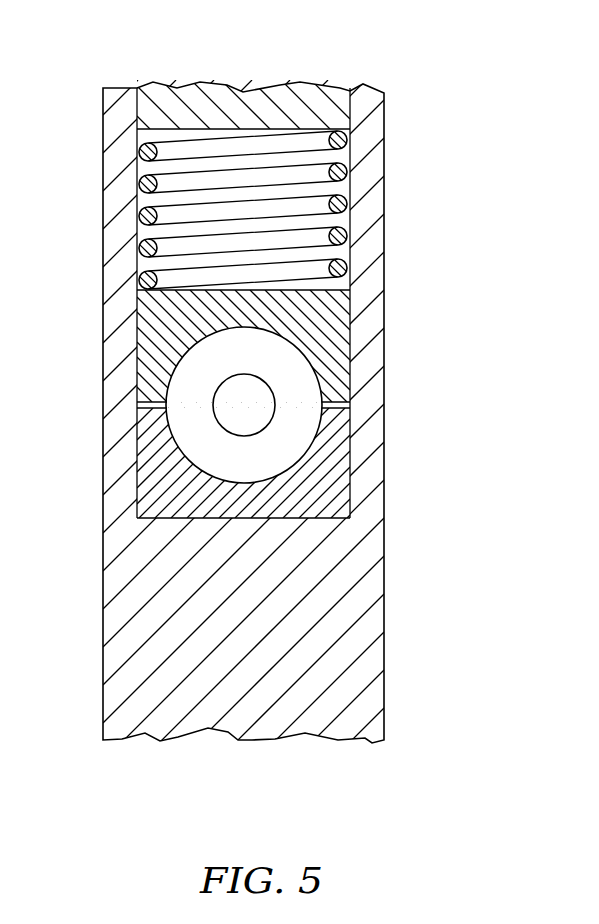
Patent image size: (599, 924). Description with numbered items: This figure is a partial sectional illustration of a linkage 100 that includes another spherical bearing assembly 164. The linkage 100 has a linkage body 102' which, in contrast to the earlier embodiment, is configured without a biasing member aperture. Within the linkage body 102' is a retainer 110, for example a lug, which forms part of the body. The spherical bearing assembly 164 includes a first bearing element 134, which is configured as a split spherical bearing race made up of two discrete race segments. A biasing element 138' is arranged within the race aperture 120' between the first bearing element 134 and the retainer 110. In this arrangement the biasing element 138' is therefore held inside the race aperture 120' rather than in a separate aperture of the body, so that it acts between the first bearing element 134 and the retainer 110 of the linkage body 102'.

The linkage 100 is at (288, 380).
The linkage body 102' is at (305, 413).
The retainer 110 is at (308, 98).
The race aperture 120' is at (297, 199).
The biasing element 138' is at (395, 188).
The spherical bearing assembly 164 is at (364, 266).
The first bearing element 134 is at (137, 463).